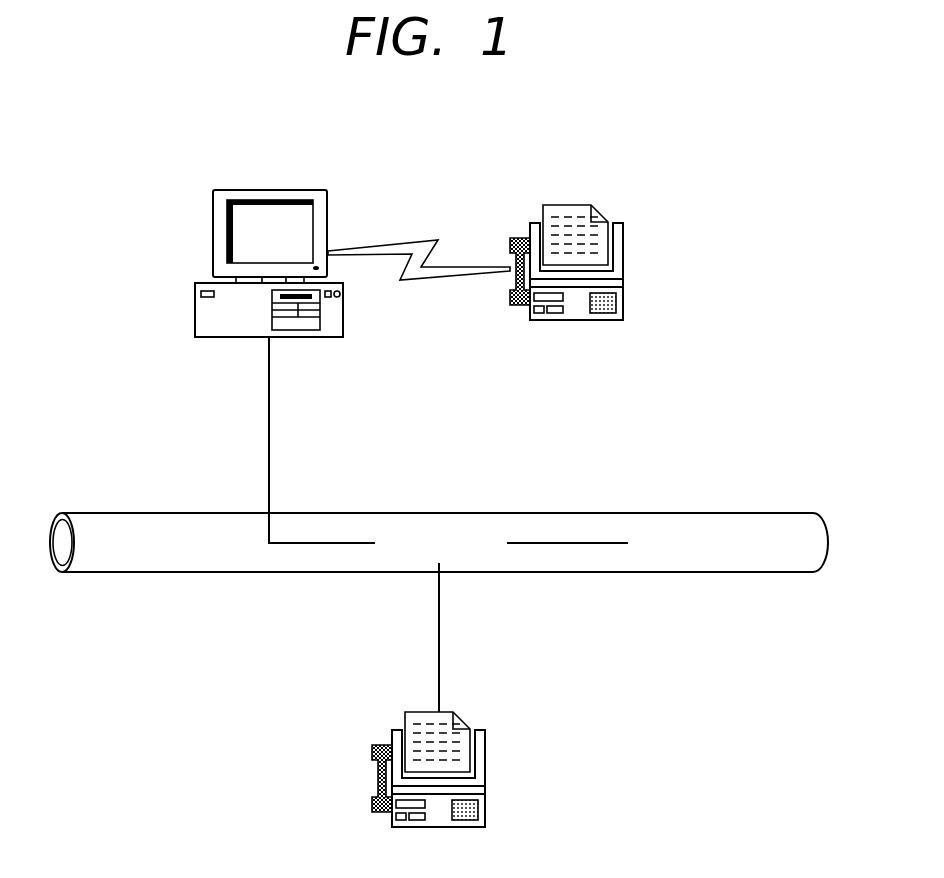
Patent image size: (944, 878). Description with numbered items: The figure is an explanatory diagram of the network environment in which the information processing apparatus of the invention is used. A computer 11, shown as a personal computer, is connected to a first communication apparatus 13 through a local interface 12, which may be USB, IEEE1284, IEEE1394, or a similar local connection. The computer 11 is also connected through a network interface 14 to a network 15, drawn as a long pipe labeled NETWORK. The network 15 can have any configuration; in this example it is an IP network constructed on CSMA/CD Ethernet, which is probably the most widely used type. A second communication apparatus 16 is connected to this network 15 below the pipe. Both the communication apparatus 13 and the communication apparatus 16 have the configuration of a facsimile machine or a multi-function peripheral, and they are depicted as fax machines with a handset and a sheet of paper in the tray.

The computer 11 is at (300, 196).
The local interface 12 is at (419, 240).
The communication apparatus 13 is at (624, 227).
The network interface 14 is at (268, 430).
The network 15 is at (794, 513).
The communication apparatus 16 is at (486, 734).